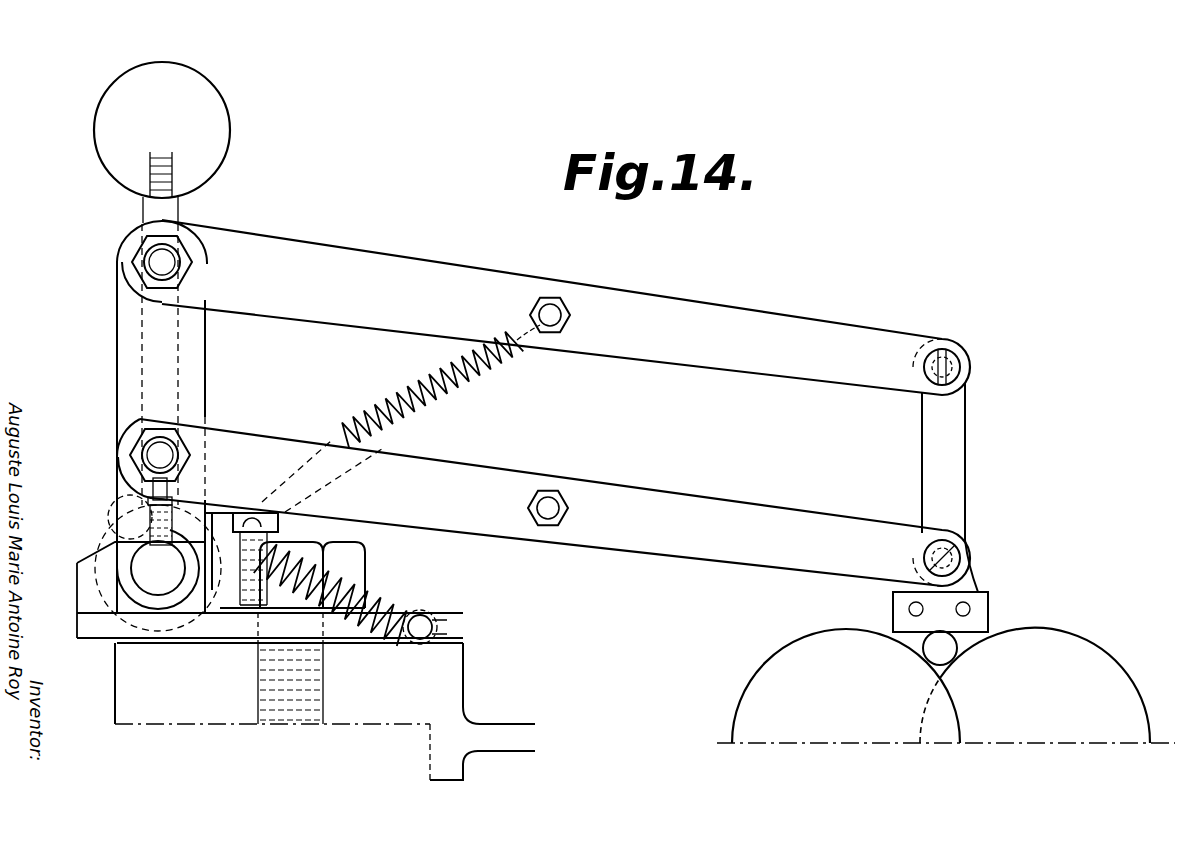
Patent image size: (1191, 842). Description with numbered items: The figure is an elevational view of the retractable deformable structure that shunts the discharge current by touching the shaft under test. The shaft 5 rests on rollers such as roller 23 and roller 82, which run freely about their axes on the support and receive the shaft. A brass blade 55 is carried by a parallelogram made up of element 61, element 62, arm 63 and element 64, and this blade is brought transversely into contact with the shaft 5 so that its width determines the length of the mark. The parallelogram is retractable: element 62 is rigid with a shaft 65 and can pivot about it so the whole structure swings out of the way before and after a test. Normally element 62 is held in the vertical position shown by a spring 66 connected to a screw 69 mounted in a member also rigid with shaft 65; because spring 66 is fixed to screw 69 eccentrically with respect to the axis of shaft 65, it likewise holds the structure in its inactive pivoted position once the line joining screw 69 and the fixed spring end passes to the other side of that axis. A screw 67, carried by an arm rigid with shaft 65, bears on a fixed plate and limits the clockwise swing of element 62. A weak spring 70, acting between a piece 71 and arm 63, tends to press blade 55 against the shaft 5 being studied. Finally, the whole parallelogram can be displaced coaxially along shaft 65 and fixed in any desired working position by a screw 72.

The shaft 5 is at (933, 650).
The roller 23 is at (1103, 652).
The brass blade 55 is at (978, 608).
The parallelogram element 61 is at (612, 535).
The parallelogram element 62 is at (122, 340).
The arm 63 is at (492, 290).
The parallelogram element 64 is at (945, 435).
The shaft 65 is at (147, 565).
The spring 66 is at (400, 598).
The screw 67 is at (280, 522).
The screw 69 is at (118, 513).
The weak spring 70 is at (463, 390).
The piece 71 is at (223, 500).
The screw 72 is at (150, 490).
The wheel 82 is at (770, 657).